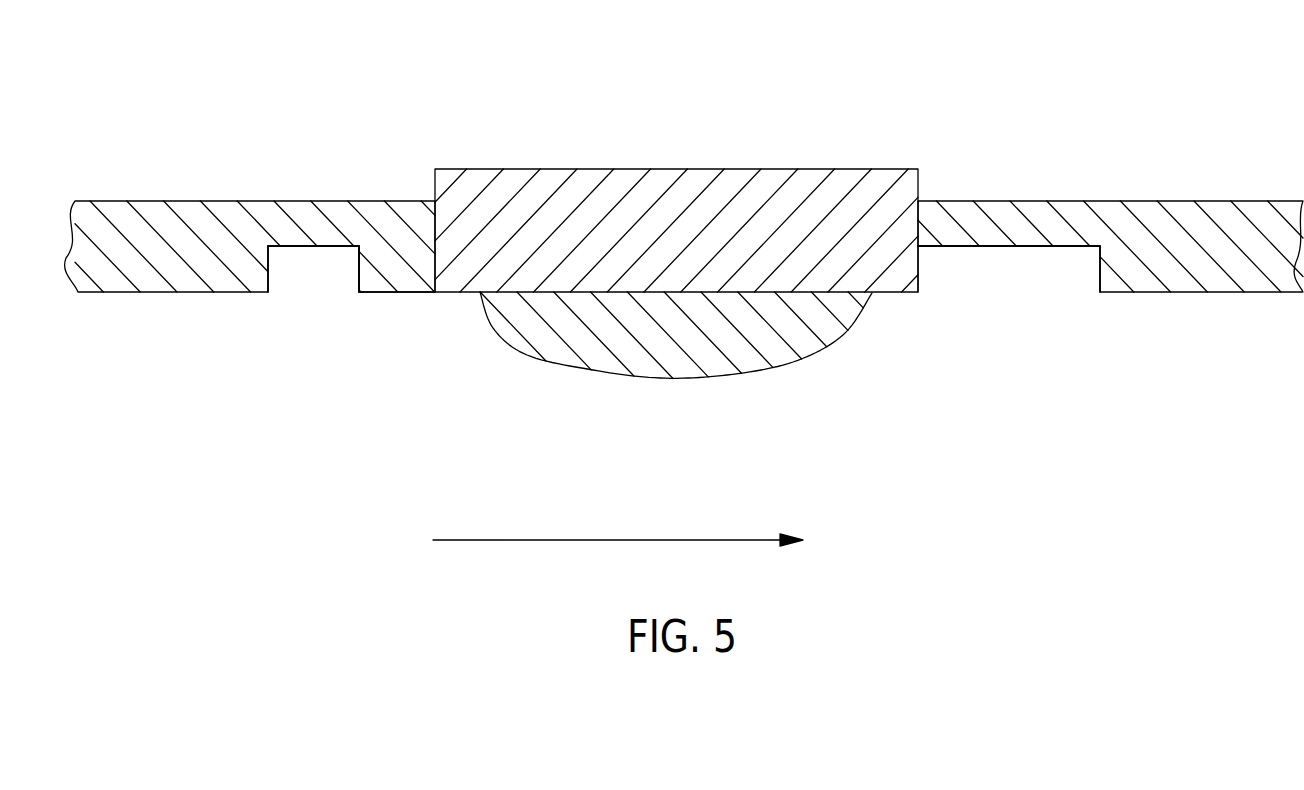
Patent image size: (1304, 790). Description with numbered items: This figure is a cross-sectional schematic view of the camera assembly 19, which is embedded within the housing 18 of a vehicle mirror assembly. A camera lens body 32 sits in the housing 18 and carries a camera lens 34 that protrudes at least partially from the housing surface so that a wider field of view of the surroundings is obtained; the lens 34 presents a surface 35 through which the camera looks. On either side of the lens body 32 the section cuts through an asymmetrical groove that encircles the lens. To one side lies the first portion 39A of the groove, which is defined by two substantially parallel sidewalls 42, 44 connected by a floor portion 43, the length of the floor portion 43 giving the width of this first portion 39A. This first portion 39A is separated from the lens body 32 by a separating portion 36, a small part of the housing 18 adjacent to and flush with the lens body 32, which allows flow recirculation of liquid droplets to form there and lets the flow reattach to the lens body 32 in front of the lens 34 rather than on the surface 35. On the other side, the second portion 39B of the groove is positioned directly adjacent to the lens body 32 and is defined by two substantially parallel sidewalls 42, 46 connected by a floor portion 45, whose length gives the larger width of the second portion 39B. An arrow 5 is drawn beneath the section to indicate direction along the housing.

The viewing direction arrow 5 is at (648, 540).
The housing 18 is at (117, 223).
The camera assembly 19 is at (676, 233).
The camera lens body 32 is at (540, 169).
The camera lens 34 is at (676, 370).
The surface of the lens 35 is at (672, 379).
The separating portion 36 is at (401, 228).
The first portion of the groove 39A is at (297, 305).
The second portion of the groove 39B is at (985, 270).
The sidewall 42 is at (267, 267).
The floor portion 43 is at (327, 245).
The sidewall 44 is at (360, 268).
The floor portion 45 is at (1052, 246).
The sidewall 46 is at (918, 275).